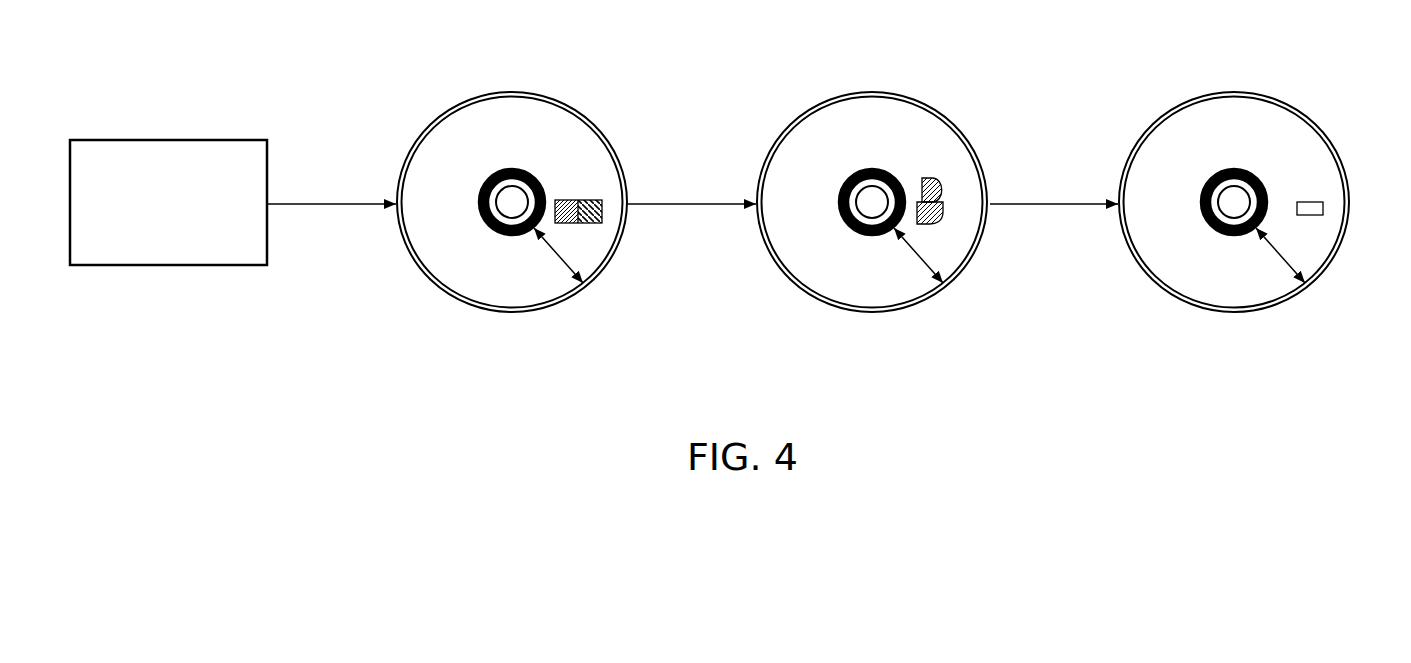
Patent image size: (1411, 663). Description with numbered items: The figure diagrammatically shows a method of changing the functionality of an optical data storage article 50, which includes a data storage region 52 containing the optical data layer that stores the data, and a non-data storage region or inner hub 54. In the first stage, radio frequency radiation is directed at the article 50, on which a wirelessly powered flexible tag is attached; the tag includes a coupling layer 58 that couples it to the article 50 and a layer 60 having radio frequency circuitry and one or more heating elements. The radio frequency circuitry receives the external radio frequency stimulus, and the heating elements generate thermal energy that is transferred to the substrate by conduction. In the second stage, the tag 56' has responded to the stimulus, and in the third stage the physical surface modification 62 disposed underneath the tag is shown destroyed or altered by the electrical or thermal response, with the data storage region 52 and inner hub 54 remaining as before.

The optical data storage article 50 is at (566, 100).
The data storage region 52 is at (557, 258).
The inner hub 54 is at (505, 233).
The wirelessly powered flexible tag 56' is at (968, 173).
The coupling layer 58 is at (170, 140).
The layer having electrical circuitry 60 is at (565, 202).
The physical surface modification 62 is at (1312, 207).